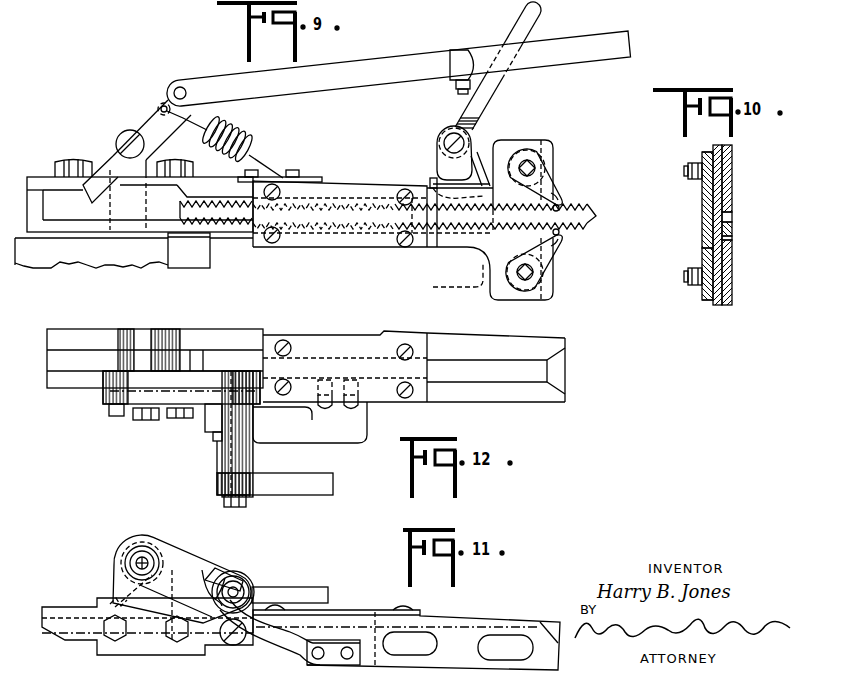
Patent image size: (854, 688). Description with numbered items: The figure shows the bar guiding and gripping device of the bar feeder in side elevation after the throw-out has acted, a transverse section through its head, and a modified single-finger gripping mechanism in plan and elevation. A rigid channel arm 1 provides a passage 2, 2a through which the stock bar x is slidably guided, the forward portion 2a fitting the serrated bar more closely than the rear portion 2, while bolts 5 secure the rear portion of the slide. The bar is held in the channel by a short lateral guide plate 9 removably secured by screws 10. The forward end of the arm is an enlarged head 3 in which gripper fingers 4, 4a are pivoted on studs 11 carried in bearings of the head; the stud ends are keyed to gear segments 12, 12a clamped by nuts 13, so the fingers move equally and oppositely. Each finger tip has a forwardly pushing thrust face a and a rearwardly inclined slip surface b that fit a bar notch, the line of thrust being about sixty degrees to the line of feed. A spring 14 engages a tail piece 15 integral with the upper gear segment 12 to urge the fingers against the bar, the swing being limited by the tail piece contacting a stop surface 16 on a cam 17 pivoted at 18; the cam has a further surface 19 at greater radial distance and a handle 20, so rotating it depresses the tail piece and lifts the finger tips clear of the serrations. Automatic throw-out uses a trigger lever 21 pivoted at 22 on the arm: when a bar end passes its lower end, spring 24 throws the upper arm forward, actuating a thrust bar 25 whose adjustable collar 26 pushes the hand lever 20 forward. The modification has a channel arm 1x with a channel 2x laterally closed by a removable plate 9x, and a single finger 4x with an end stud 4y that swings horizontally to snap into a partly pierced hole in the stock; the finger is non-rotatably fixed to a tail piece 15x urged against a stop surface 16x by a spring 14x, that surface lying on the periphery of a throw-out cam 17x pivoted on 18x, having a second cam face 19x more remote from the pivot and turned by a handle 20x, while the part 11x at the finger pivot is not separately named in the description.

In FIG. 9, the rigid arm 1 is at (224, 239).
In FIG. 9, the rear portion of guide passage 2 is at (243, 240).
In FIG. 9, the forward portion of guide channel 2a is at (437, 250).
In FIG. 9, the enlarged head 3 is at (557, 141).
In FIG. 10, the enlarged head 3 is at (733, 150).
In FIG. 9, the gripper finger 4 is at (543, 179).
In FIG. 10, the gripper finger 4 is at (733, 173).
In FIG. 9, the gripper finger 4a is at (541, 260).
In FIG. 10, the gripper finger 4a is at (733, 271).
In FIG. 9, the bolts 5 is at (62, 162).
In FIG. 9, the lateral guide plate 9 is at (335, 248).
In FIG. 9, the screws 10 is at (277, 243).
In FIG. 9, the studs 11 is at (538, 159).
In FIG. 10, the studs 11 is at (702, 153).
In FIG. 9, the gear segment 12 is at (505, 152).
In FIG. 10, the gear segment 12 is at (702, 199).
In FIG. 9, the gear segment 12a is at (488, 255).
In FIG. 10, the gear segment 12a is at (702, 249).
In FIG. 9, the nuts 13 is at (549, 157).
In FIG. 10, the nuts 13 is at (684, 171).
In FIG. 9, the spring 14 is at (326, 182).
In FIG. 9, the tail piece 15 is at (440, 188).
In FIG. 9, the stop surface 16 is at (437, 165).
In FIG. 9, the cam 17 is at (440, 153).
In FIG. 9, the pivot 18 is at (448, 135).
In FIG. 9, the cam surface 19 is at (478, 153).
In FIG. 9, the handle 20 is at (539, 19).
In FIG. 9, the trigger lever 21 is at (104, 166).
In FIG. 9, the pivot 22 is at (126, 131).
In FIG. 9, the spring 24 is at (243, 133).
In FIG. 9, the thrust bar 25 is at (339, 90).
In FIG. 9, the adjustable collar 26 is at (461, 52).
In FIG. 9, the thrust face a is at (560, 207).
In FIG. 9, the slip surface b is at (557, 197).
In FIG. 10, the slip surface b is at (733, 215).
In FIG. 9, the bar x is at (594, 220).
In FIG. 10, the bar x is at (733, 229).
In FIG. 12, the channel arm 1x is at (518, 398).
In FIG. 11, the channel arm 1x is at (488, 626).
In FIG. 12, the channel 2x is at (467, 376).
In FIG. 11, the channel 2x is at (445, 626).
In FIG. 12, the single finger 4x is at (118, 354).
In FIG. 11, the single finger 4x is at (117, 580).
In FIG. 11, the end stud 4y is at (112, 602).
In FIG. 12, the removable plate 9x is at (383, 398).
In FIG. 11, the removable plate 9x is at (353, 611).
In FIG. 12, the pivot 11x is at (140, 345).
In FIG. 11, the pivot 11x is at (137, 543).
In FIG. 12, the spring 14x is at (306, 444).
In FIG. 12, the tail piece 15x is at (218, 453).
In FIG. 11, the tail piece 15x is at (246, 585).
In FIG. 11, the stop surface 16x is at (232, 578).
In FIG. 12, the throw-out cam 17x is at (212, 440).
In FIG. 11, the throw-out cam 17x is at (225, 578).
In FIG. 12, the pivot 18x is at (254, 462).
In FIG. 11, the pivot 18x is at (254, 578).
In FIG. 12, the second cam face 19x is at (214, 420).
In FIG. 11, the second cam face 19x is at (202, 570).
In FIG. 12, the handle 20x is at (290, 491).
In FIG. 11, the handle 20x is at (312, 593).